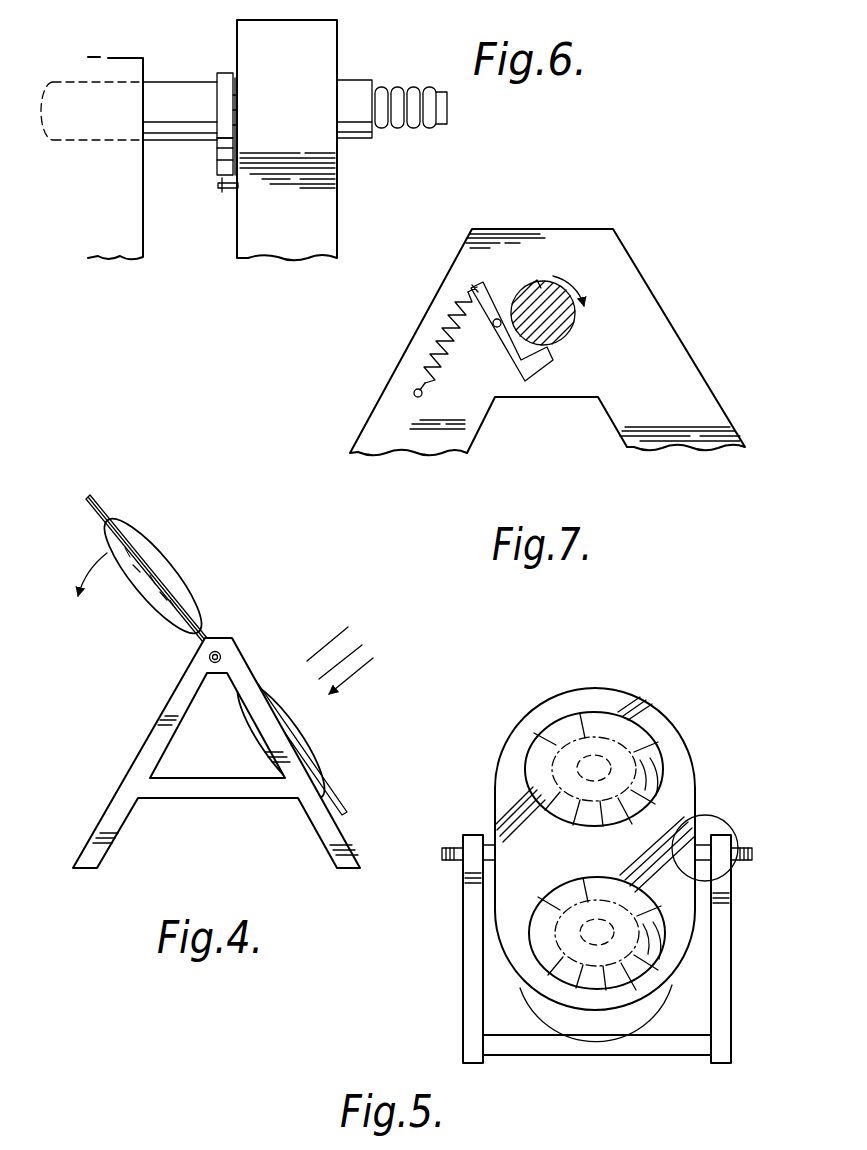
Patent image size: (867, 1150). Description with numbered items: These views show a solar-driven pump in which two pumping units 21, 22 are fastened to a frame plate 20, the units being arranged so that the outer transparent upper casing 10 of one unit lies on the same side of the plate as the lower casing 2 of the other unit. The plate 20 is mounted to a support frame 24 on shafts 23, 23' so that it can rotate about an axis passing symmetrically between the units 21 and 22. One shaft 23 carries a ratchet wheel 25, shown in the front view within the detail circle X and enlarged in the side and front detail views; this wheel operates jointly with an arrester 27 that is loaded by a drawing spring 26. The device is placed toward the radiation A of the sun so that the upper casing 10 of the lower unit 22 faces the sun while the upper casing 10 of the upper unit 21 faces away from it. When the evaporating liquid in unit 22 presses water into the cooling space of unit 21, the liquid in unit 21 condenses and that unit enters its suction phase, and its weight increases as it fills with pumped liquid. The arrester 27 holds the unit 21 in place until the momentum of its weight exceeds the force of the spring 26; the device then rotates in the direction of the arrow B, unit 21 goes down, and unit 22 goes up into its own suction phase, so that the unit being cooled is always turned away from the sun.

In FIG. 4, the lower casing 2 is at (162, 568).
In FIG. 5, the lower casing 2 is at (623, 763).
In FIG. 4, the upper casing 10 is at (142, 582).
In FIG. 5, the upper casing 10 is at (627, 946).
In FIG. 4, the frame plate 20 is at (100, 502).
In FIG. 5, the frame plate 20 is at (685, 755).
In FIG. 4, the pumping unit 21 is at (132, 537).
In FIG. 5, the pumping unit 21 is at (630, 735).
In FIG. 4, the pumping unit 22 is at (320, 768).
In FIG. 5, the pumping unit 22 is at (557, 968).
In FIG. 6, the shaft 23 is at (244, 88).
In FIG. 7, the shaft 23 is at (532, 301).
In FIG. 5, the shaft 23 is at (736, 816).
In FIG. 4, the shaft 23' is at (247, 625).
In FIG. 5, the shaft 23' is at (466, 817).
In FIG. 4, the support frame 24 is at (138, 777).
In FIG. 5, the support frame 24 is at (468, 965).
In FIG. 6, the ratchet wheel 25 is at (223, 88).
In FIG. 7, the ratchet wheel 25 is at (537, 283).
In FIG. 6, the drawing spring 26 is at (222, 192).
In FIG. 7, the drawing spring 26 is at (465, 328).
In FIG. 6, the arrester 27 is at (222, 163).
In FIG. 7, the arrester 27 is at (545, 363).
In FIG. 4, the radiation of the sun A is at (346, 654).
In FIG. 4, the direction of rotation B is at (86, 591).
In FIG. 5, the detail X is at (707, 815).